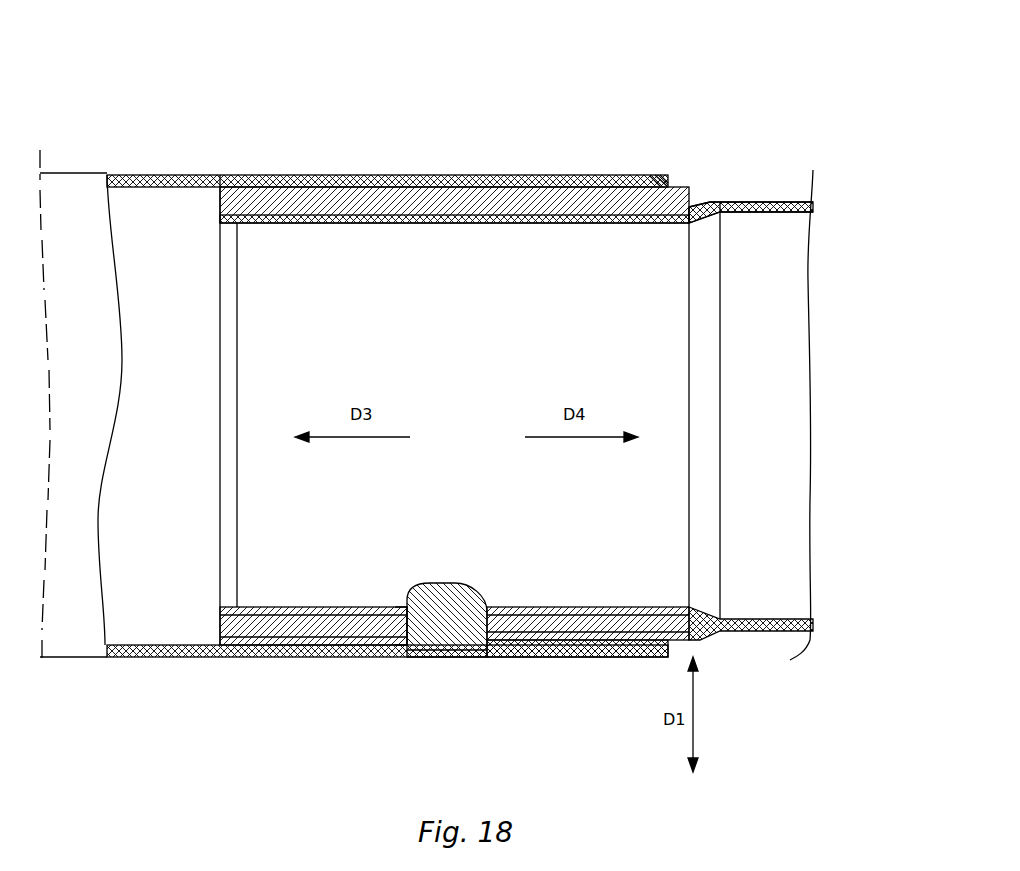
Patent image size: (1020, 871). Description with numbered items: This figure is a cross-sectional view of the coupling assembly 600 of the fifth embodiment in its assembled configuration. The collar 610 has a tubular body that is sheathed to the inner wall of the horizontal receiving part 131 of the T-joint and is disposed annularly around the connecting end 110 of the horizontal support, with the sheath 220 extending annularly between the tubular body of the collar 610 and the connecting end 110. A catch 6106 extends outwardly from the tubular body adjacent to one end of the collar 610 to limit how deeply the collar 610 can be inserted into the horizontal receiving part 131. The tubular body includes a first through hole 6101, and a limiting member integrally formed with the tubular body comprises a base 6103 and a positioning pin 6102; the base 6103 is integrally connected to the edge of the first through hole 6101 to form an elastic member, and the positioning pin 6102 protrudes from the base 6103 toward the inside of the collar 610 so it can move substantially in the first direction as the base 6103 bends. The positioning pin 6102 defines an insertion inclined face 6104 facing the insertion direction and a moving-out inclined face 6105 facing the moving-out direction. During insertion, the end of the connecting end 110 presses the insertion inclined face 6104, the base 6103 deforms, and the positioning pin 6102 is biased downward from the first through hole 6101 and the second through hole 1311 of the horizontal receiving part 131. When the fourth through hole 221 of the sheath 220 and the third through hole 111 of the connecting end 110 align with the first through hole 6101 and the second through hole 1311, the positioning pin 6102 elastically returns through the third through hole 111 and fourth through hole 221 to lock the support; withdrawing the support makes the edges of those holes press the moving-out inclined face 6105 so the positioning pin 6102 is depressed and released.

The coupling assembly 600 is at (241, 72).
The horizontal receiving part 131 is at (190, 174).
The second through hole 1311 is at (350, 657).
The collar 610 is at (438, 182).
The catch 6106 is at (668, 178).
The sheath 220 is at (300, 215).
The connecting end 110 is at (567, 215).
The fourth through hole 221 is at (398, 600).
The moving-out inclined face 6105 is at (408, 594).
The insertion inclined face 6104 is at (480, 600).
The first through hole 6101 is at (495, 655).
The positioning pin 6102 is at (438, 655).
The base 6103 is at (368, 657).
The third through hole 111 is at (640, 588).